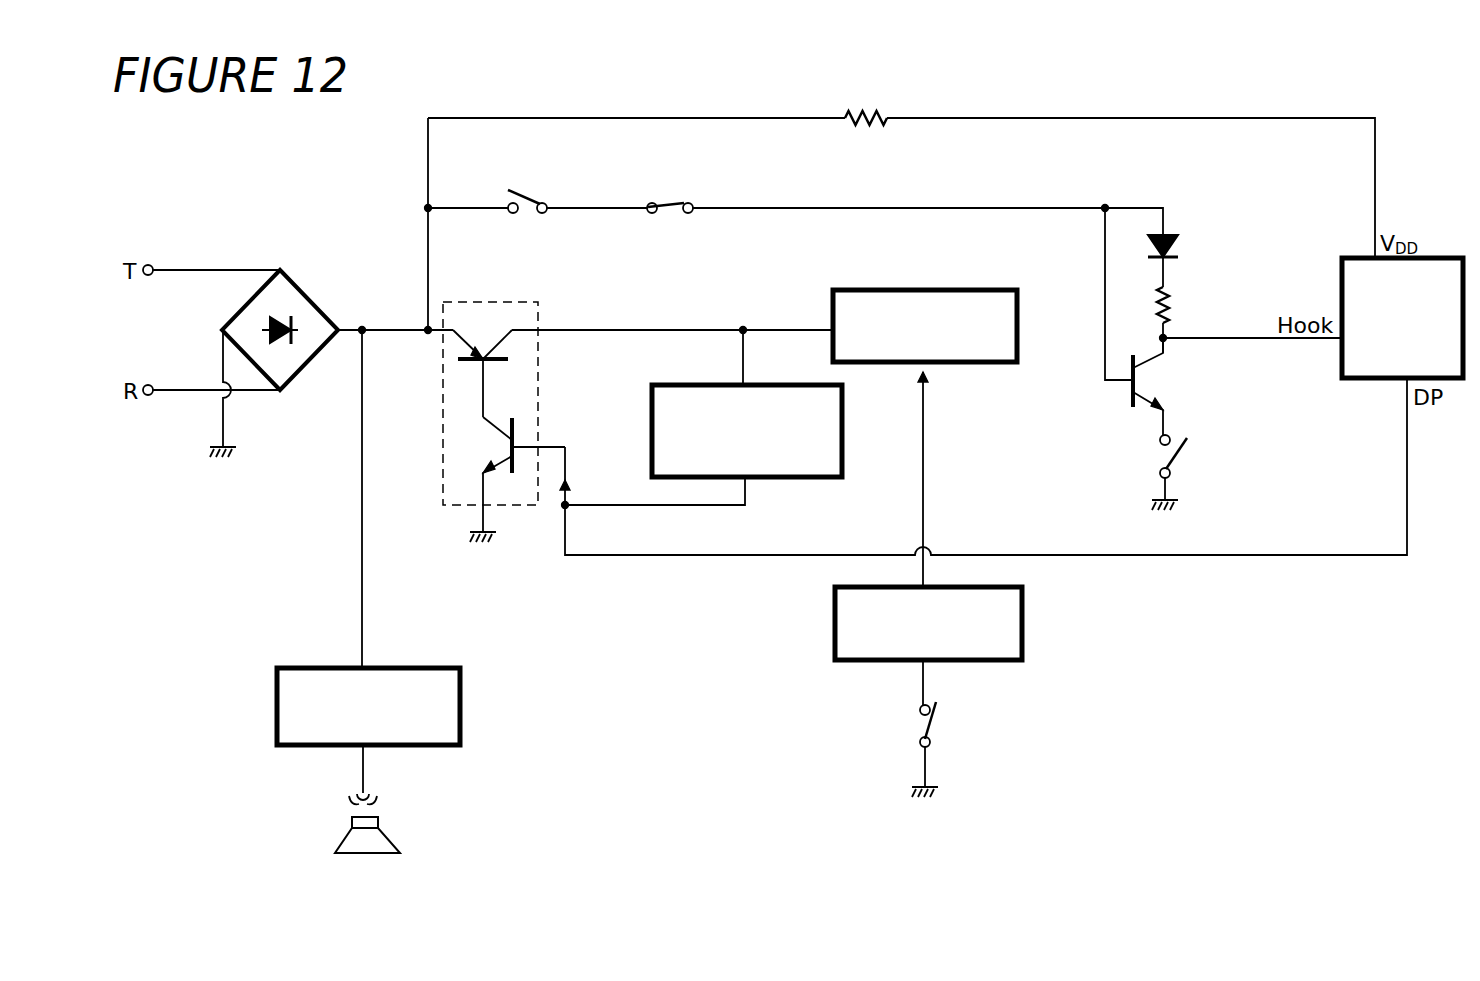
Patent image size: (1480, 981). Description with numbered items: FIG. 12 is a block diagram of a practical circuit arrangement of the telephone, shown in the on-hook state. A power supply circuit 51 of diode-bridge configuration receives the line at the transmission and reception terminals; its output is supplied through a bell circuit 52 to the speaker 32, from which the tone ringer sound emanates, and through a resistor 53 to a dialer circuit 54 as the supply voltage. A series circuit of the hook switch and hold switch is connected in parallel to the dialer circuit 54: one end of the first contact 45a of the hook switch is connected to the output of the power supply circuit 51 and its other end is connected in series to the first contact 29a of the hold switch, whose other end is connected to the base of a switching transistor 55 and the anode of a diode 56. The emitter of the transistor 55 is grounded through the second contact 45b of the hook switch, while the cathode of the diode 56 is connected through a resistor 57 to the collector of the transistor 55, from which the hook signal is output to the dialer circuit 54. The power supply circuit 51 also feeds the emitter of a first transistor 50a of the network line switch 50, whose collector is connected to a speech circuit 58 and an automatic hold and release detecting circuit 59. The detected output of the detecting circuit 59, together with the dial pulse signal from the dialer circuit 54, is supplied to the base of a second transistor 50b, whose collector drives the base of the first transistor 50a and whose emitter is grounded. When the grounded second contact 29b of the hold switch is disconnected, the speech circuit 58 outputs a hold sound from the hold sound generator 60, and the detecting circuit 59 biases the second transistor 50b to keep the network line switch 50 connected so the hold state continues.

The power supply circuit 51 is at (297, 362).
The first contact of the hook switch 45a is at (532, 203).
The first contact of the hold switch 29a is at (668, 202).
The resistor 53 is at (863, 125).
The diode 56 is at (1180, 247).
The resistor 57 is at (1175, 306).
The switching transistor 55 is at (1145, 381).
The second contact of the hook switch 45b is at (1176, 468).
The dialer circuit 54 is at (1372, 380).
The speech circuit 58 is at (985, 365).
The automatic hold and release detecting circuit 59 is at (817, 480).
The hold sound generator 60 is at (1022, 632).
The second contact of the hold switch 29b is at (937, 718).
The bell circuit 52 is at (462, 712).
The speaker 32 is at (400, 848).
The network line switch 50 is at (483, 470).
The first transistor 50a is at (463, 345).
The second transistor 50b is at (497, 447).